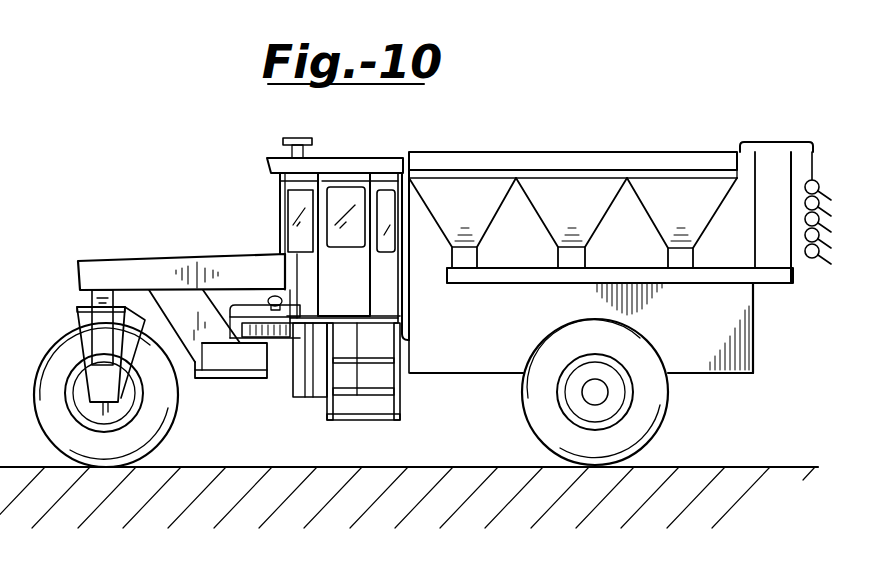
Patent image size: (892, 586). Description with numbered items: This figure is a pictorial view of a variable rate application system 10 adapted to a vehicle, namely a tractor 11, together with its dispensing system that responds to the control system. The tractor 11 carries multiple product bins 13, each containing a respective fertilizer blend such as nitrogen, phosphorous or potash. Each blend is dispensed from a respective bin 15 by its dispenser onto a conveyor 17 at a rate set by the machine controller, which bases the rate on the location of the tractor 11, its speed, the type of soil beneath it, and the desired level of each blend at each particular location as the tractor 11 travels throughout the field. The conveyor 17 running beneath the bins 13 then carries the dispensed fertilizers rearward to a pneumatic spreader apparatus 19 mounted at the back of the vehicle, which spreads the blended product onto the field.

The variable rate application system 10 is at (697, 467).
The tractor 11 is at (112, 258).
The product bin 13 is at (427, 211).
The bin 15 is at (448, 263).
The conveyor 17 is at (505, 283).
The pneumatic spreader apparatus 19 is at (812, 145).